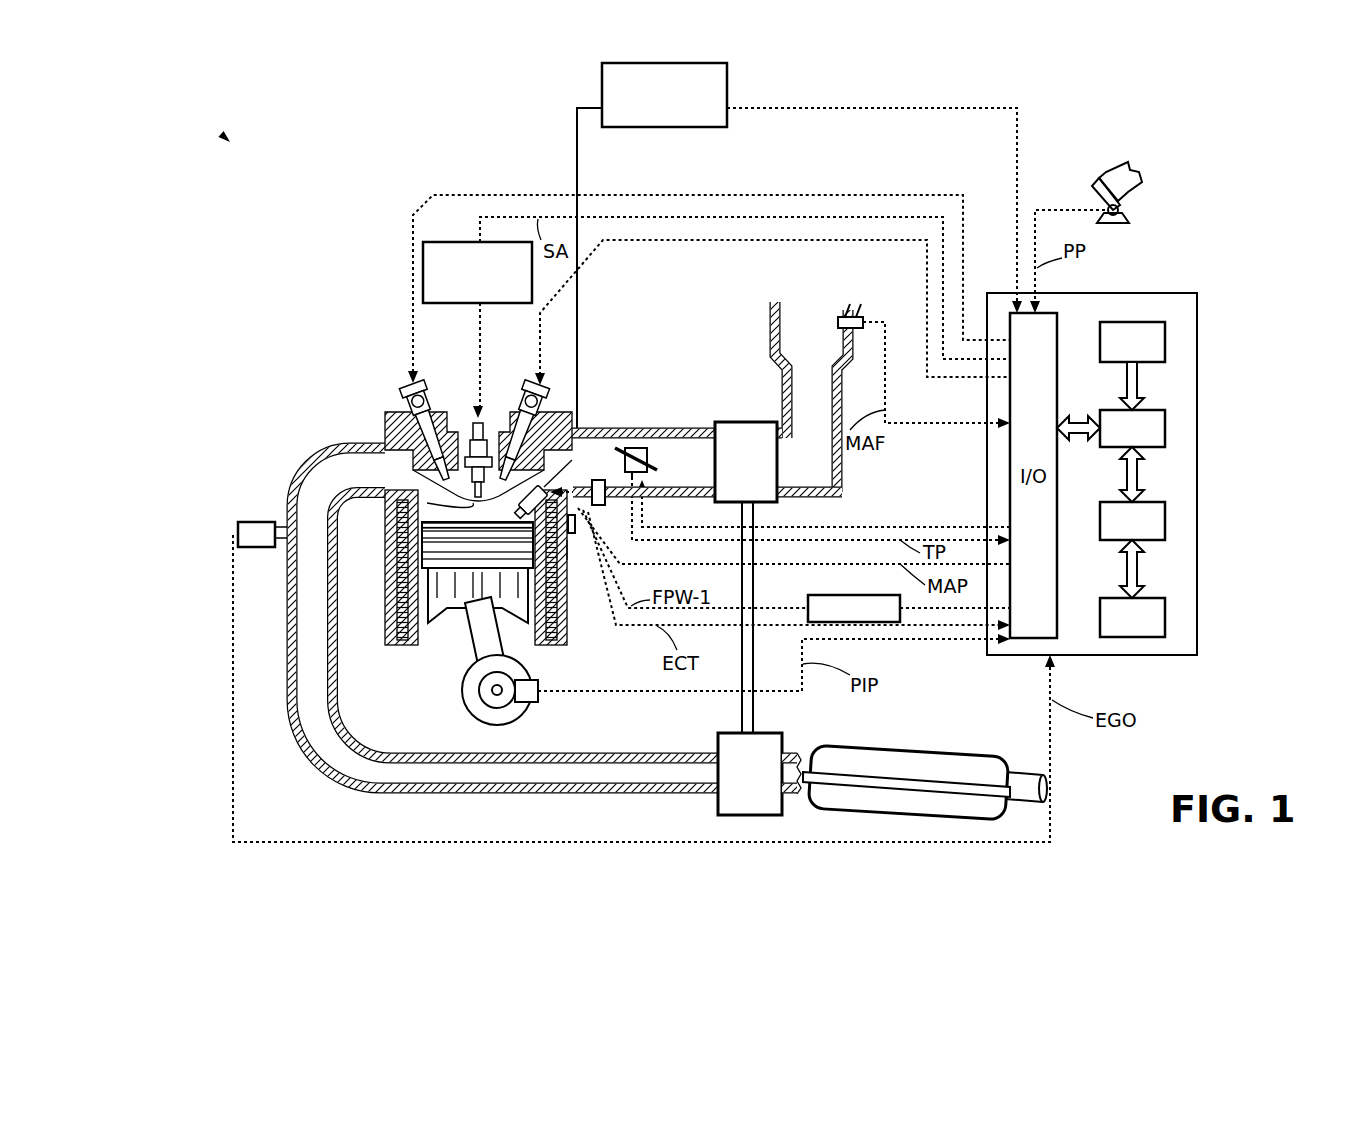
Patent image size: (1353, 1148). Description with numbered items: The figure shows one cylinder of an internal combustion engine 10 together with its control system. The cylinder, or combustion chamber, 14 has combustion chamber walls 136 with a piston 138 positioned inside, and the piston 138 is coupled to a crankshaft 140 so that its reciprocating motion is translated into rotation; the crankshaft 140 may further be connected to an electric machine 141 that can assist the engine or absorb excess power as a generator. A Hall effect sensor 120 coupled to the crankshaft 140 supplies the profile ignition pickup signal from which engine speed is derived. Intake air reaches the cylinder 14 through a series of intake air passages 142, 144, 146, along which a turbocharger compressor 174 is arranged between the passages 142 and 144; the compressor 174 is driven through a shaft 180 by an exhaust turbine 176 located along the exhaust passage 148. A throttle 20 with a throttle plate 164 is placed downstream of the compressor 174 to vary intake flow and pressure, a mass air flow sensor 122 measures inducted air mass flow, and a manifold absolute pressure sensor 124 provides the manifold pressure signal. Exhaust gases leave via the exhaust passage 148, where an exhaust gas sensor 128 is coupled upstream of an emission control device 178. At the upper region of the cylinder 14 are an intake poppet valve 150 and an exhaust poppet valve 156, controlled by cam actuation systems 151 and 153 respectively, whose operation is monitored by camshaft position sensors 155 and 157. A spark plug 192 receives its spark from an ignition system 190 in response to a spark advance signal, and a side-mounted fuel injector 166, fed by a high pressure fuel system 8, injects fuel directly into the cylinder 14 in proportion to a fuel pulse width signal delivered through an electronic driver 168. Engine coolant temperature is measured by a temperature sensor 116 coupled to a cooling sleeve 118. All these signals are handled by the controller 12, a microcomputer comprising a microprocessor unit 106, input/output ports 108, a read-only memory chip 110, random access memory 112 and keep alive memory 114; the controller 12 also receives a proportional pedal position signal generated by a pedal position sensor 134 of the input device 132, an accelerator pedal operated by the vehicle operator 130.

The high pressure fuel system 8 is at (727, 75).
The internal combustion engine 10 is at (222, 135).
The controller 12 is at (1197, 293).
The cylinder 14 is at (458, 551).
The throttle 20 is at (637, 448).
The microprocessor unit 106 is at (1165, 426).
The input/output ports 108 is at (1058, 322).
The read-only memory chip 110 is at (1165, 338).
The random access memory 112 is at (1165, 520).
The keep alive memory 114 is at (1165, 615).
The temperature sensor 116 is at (575, 535).
The cooling sleeve 118 is at (569, 560).
The Hall effect sensor 120 is at (538, 702).
The mass air flow sensor 122 is at (861, 314).
The manifold absolute pressure sensor 124 is at (599, 505).
The exhaust gas sensor 128 is at (238, 528).
The vehicle operator 130 is at (1140, 176).
The input device 132 is at (1100, 195).
The pedal position sensor 134 is at (1128, 212).
The combustion chamber walls 136 is at (402, 632).
The piston 138 is at (462, 595).
The crankshaft 140 is at (480, 718).
The electric machine 141 is at (463, 700).
The intake air passage 142 is at (827, 346).
The intake air passage 144 is at (704, 470).
The intake air passage 146 is at (610, 470).
The exhaust passage 148 is at (373, 480).
The intake poppet valve 150 is at (488, 432).
The cam actuation system 151 is at (525, 383).
The cam actuation system 153 is at (427, 383).
The camshaft position sensor 155 is at (553, 400).
The exhaust poppet valve 156 is at (407, 440).
The camshaft position sensor 157 is at (400, 398).
The throttle plate 164 is at (618, 448).
The fuel injector 166 is at (542, 490).
The electronic driver 168 is at (812, 595).
The compressor 174 is at (732, 422).
The exhaust turbine 176 is at (718, 812).
The emission control device 178 is at (968, 753).
The shaft 180 is at (750, 702).
The ignition system 190 is at (441, 240).
The spark plug 192 is at (470, 432).